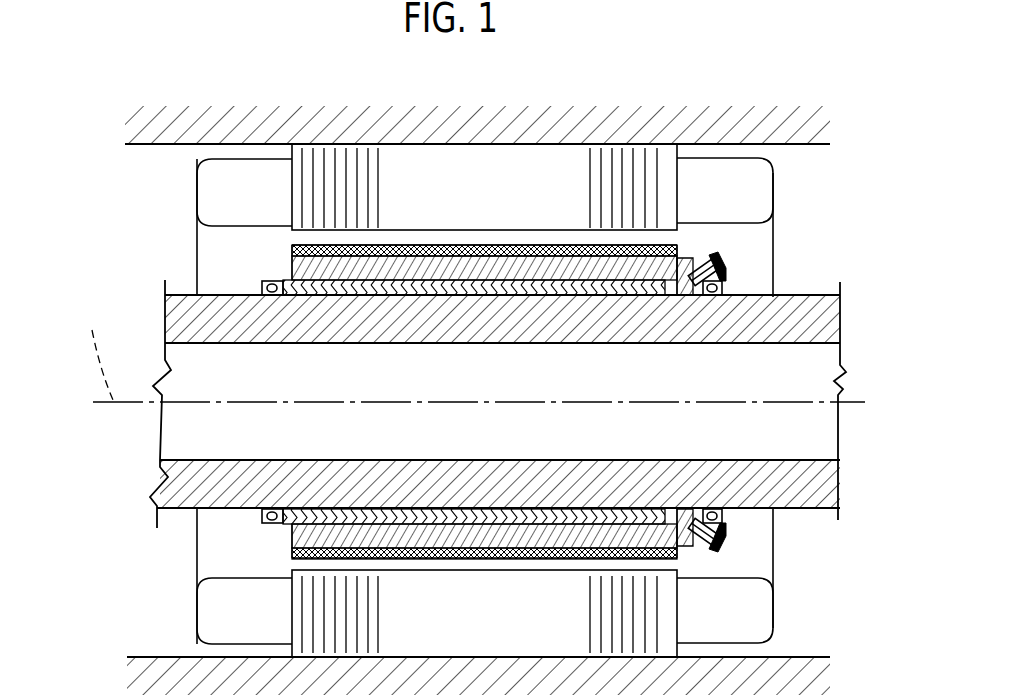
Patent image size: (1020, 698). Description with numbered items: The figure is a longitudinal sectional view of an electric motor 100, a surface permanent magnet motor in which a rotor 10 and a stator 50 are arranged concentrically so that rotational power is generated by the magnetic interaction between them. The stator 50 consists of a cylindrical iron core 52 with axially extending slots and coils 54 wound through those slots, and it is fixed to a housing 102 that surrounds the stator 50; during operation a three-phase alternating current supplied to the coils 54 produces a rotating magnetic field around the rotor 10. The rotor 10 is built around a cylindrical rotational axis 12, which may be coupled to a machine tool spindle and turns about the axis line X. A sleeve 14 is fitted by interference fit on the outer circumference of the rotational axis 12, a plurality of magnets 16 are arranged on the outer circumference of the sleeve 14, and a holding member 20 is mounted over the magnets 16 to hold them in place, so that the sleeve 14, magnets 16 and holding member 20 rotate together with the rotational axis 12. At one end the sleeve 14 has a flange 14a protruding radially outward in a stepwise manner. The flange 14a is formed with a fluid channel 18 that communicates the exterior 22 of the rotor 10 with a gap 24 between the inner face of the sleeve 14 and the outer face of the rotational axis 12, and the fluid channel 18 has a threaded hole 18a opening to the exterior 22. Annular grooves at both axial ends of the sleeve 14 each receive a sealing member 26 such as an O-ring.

The electric motor 100 is at (72, 112).
The housing 102 is at (790, 122).
The stator 50 is at (184, 157).
The coils 54 is at (197, 190).
The cylindrical iron core 52 is at (493, 193).
The rotor 10 is at (263, 258).
The holding member 20 is at (527, 245).
The magnets 16 is at (383, 262).
The sleeve 14 is at (627, 298).
The flange 14a is at (693, 255).
The gap 24 is at (614, 306).
The fluid channel 18 is at (688, 252).
The threaded hole 18a is at (723, 267).
The sealing member 26 is at (260, 290).
The exterior 22 is at (810, 197).
The rotational axis 12 is at (820, 297).